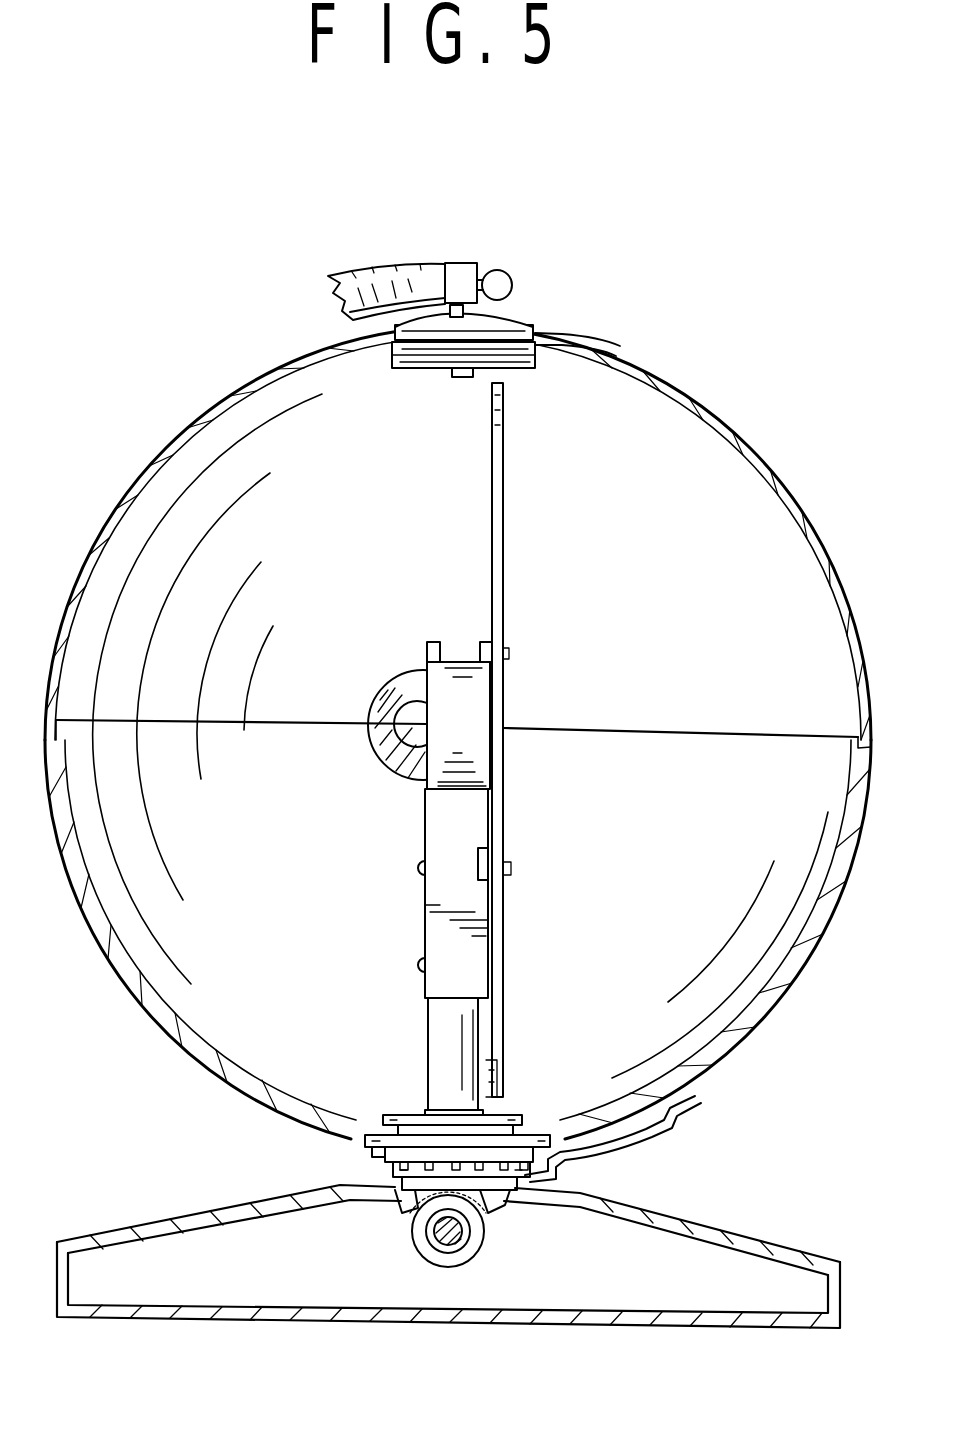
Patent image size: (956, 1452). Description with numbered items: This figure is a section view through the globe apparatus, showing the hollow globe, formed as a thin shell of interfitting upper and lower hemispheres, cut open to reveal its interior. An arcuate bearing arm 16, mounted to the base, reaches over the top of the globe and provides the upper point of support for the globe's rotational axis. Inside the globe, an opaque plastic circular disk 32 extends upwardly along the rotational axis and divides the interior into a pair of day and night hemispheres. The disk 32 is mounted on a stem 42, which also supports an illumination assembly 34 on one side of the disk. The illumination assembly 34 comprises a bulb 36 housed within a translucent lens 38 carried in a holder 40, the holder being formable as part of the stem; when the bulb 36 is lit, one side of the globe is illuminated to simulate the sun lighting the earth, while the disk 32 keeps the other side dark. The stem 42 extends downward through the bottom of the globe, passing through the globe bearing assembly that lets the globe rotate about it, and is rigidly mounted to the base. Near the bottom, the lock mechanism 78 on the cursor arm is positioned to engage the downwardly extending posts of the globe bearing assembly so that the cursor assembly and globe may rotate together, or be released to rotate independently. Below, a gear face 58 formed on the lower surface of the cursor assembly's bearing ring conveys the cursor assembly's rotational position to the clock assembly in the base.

The arcuate bearing arm 16 is at (353, 283).
The circular disk 32 is at (505, 528).
The illumination assembly 34 is at (364, 690).
The bulb 36 is at (405, 668).
The translucent lens 38 is at (400, 757).
The holder 40 is at (472, 720).
The stem 42 is at (430, 1042).
The gear face 58 is at (502, 1208).
The lock mechanism 78 is at (612, 1163).